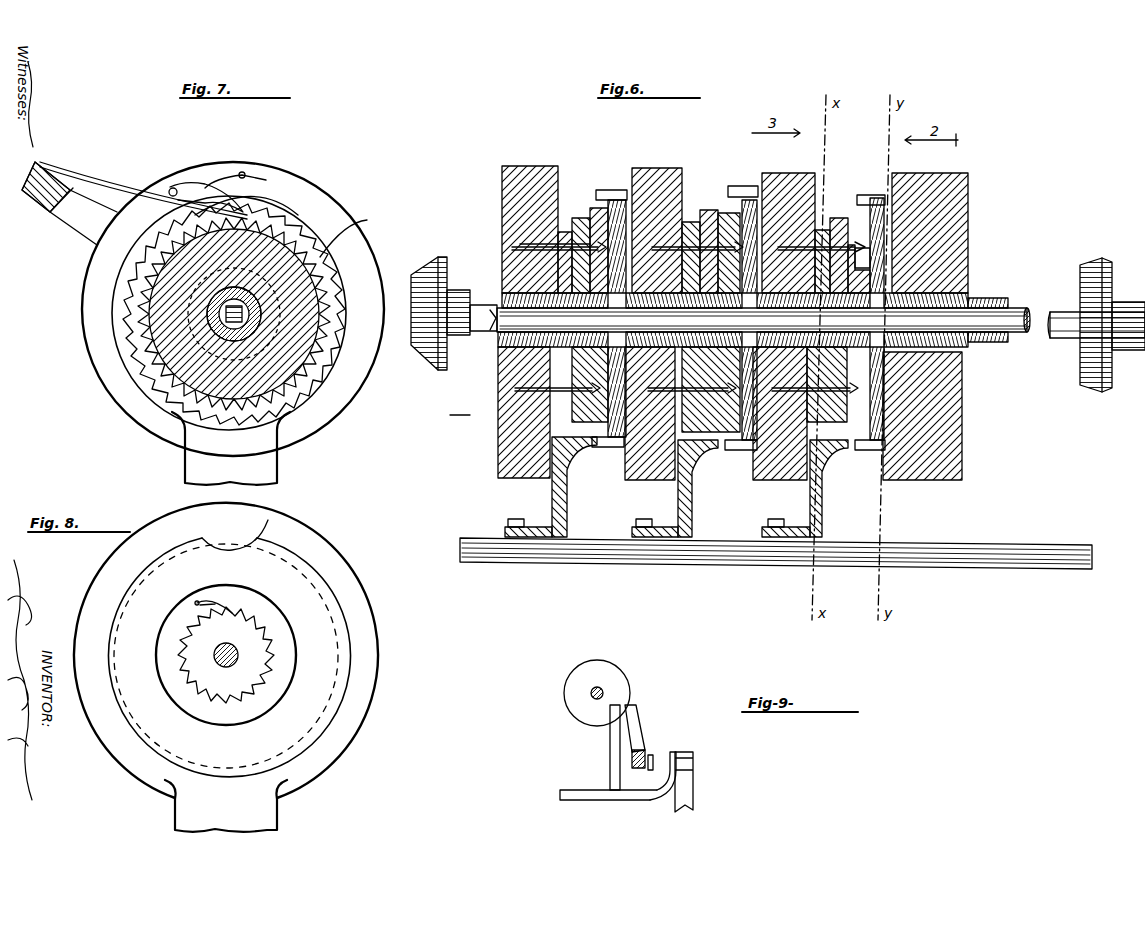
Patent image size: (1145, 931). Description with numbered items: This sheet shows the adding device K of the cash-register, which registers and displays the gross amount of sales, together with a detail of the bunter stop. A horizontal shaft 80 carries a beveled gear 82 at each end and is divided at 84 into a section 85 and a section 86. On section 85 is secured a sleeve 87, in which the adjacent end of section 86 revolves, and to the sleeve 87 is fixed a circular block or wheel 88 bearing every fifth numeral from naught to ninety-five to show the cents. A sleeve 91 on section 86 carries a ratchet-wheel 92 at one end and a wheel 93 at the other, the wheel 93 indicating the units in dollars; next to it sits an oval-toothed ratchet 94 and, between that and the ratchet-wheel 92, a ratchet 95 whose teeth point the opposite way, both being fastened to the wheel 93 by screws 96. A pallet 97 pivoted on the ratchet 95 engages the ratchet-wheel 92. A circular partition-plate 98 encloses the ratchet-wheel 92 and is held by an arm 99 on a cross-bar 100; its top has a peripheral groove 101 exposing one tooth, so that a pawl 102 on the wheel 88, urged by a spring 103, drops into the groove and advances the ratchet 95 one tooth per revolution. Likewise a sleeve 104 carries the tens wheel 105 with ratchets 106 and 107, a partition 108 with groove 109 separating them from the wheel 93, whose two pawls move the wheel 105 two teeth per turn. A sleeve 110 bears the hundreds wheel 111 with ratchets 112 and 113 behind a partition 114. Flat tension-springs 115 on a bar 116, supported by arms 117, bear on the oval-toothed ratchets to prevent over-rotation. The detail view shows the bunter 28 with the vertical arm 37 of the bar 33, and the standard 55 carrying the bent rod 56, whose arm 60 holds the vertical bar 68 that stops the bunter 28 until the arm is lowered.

In FIG. 9, the bunter 28 is at (563, 684).
In FIG. 9, the horizontally-arranged bar 33 is at (632, 760).
In FIG. 9, the vertical arm 37 is at (642, 730).
In FIG. 9, the vertical standard 55 is at (695, 775).
In FIG. 9, the bent rod 56 is at (666, 775).
In FIG. 9, the horizontally-arranged arm 60 is at (572, 792).
In FIG. 9, the vertically-arranged bar 68 is at (610, 748).
In FIG. 6, the horizontal shaft 80 is at (1055, 340).
In FIG. 6, the beveled gear 82 is at (430, 265).
In FIG. 6, the division of shaft 84 is at (968, 352).
In FIG. 6, the shaft-section 85 is at (1030, 345).
In FIG. 8, the shaft-section 86 is at (214, 652).
In FIG. 6, the shaft-section 86 is at (497, 338).
In FIG. 6, the sleeve 87 is at (1008, 305).
In FIG. 7, the circular block or wheel 88 is at (332, 186).
In FIG. 6, the circular block or wheel 88 is at (962, 445).
In FIG. 6, the sleeve 91 is at (750, 200).
In FIG. 7, the ratchet-wheel 92 is at (245, 325).
In FIG. 8, the ratchet-wheel 92 is at (255, 665).
In FIG. 6, the ratchet-wheel 92 is at (968, 293).
In FIG. 8, the wheel 93 is at (340, 532).
In FIG. 6, the wheel 93 is at (808, 175).
In FIG. 7, the oval-toothed ratchet 94 is at (293, 250).
In FIG. 6, the oval-toothed ratchet 94 is at (825, 230).
In FIG. 7, the ratchet 95 is at (355, 231).
In FIG. 8, the ratchet 95 is at (340, 712).
In FIG. 6, the ratchet 95 is at (845, 218).
In FIG. 6, the screws 96 is at (800, 175).
In FIG. 6, the pallet 97 is at (880, 267).
In FIG. 7, the circular partition-plate 98 is at (330, 393).
In FIG. 8, the circular partition-plate 98 is at (350, 676).
In FIG. 6, the circular partition-plate 98 is at (880, 239).
In FIG. 7, the arm 99 is at (231, 448).
In FIG. 8, the arm 99 is at (268, 815).
In FIG. 6, the arm 99 is at (822, 487).
In FIG. 6, the cross-bar 100 is at (745, 568).
In FIG. 7, the peripheral groove 101 is at (280, 168).
In FIG. 8, the peripheral groove 101 is at (270, 520).
In FIG. 6, the peripheral groove 101 is at (884, 213).
In FIG. 7, the pawl 102 is at (173, 185).
In FIG. 6, the pawl 102 is at (612, 190).
In FIG. 7, the spring 103 is at (238, 172).
In FIG. 6, the sleeve 104 is at (665, 168).
In FIG. 6, the wheel 105 is at (708, 210).
In FIG. 6, the ratchet 106 is at (690, 222).
In FIG. 6, the ratchet 107 is at (730, 213).
In FIG. 6, the circular partition 108 is at (712, 460).
In FIG. 6, the groove 109 is at (758, 186).
In FIG. 6, the sleeve 110 is at (495, 300).
In FIG. 6, the wheel 111 is at (530, 166).
In FIG. 6, the ratchet 112 is at (562, 232).
In FIG. 6, the ratchet 113 is at (585, 218).
In FIG. 6, the circular partition 114 is at (622, 200).
In FIG. 7, the flat tension-springs 115 is at (108, 195).
In FIG. 7, the longitudinally arranged bar 116 is at (30, 195).
In FIG. 7, the arms 117 is at (70, 230).
In FIG. 6, the adding device K is at (460, 415).